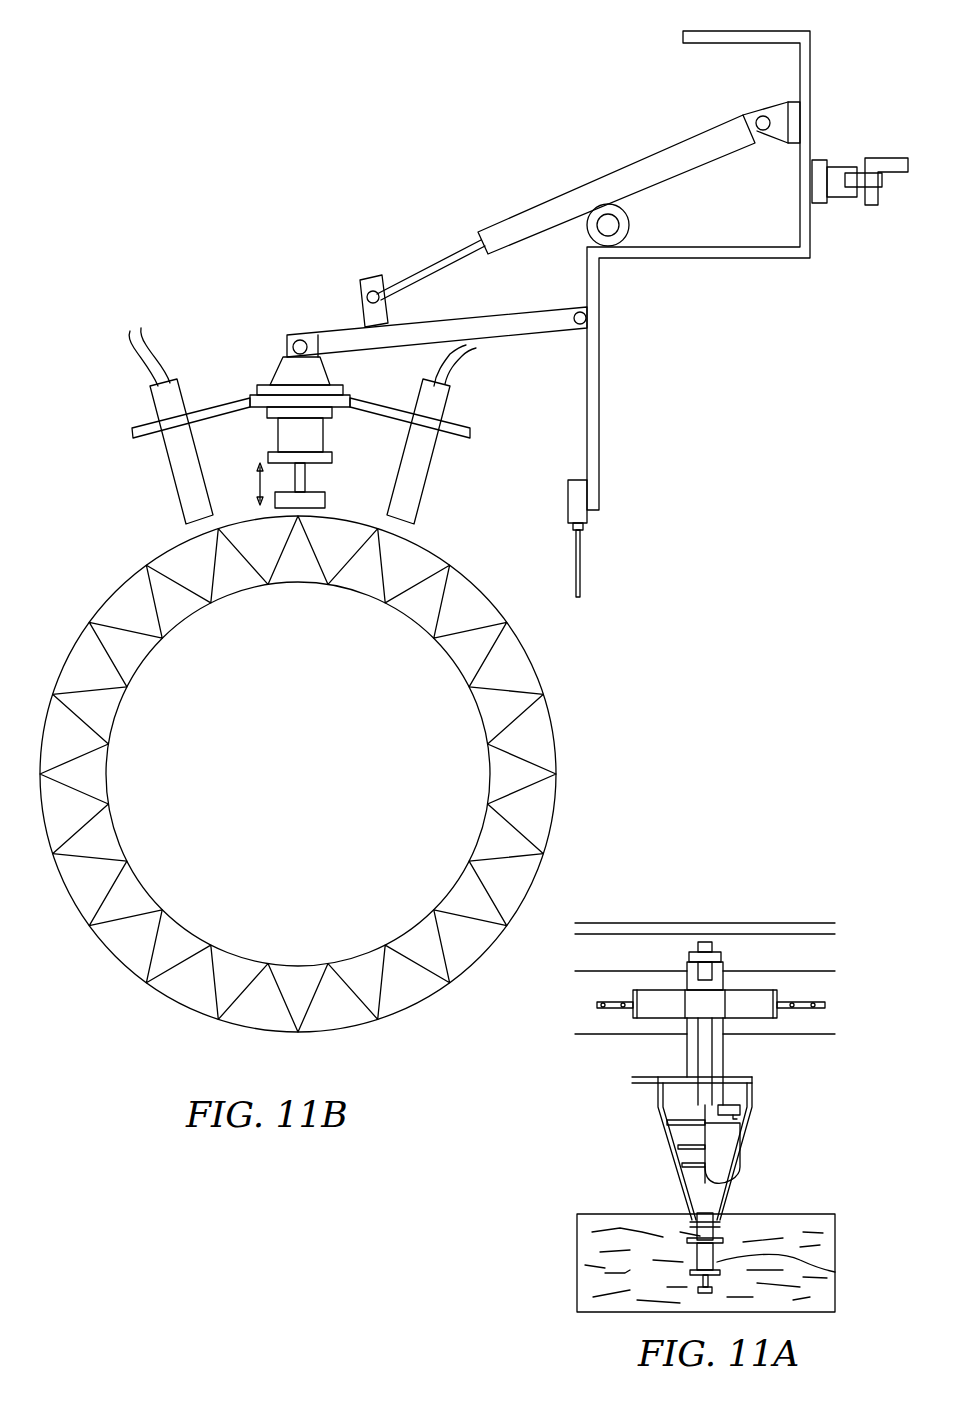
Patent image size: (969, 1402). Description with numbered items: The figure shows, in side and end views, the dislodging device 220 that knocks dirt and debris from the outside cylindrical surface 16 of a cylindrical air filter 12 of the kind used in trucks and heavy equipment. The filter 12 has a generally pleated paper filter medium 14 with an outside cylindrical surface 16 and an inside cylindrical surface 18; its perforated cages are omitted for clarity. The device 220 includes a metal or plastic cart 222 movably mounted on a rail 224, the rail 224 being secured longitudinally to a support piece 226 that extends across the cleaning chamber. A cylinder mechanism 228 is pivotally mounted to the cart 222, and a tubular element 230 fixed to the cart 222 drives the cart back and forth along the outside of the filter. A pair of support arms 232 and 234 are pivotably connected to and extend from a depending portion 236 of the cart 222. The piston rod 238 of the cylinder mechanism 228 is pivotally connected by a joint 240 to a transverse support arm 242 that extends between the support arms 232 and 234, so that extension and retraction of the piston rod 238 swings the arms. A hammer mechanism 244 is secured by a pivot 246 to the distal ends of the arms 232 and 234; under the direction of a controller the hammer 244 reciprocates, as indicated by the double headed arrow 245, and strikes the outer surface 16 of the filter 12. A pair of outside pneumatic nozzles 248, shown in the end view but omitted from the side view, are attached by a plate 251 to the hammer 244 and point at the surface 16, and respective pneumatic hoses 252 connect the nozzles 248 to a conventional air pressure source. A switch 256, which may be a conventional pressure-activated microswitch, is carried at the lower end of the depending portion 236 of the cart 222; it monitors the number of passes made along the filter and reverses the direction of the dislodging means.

In FIG. 11B, the cylindrical air filter 12 is at (558, 790).
In FIG. 11A, the cylindrical air filter 12 is at (576, 1297).
In FIG. 11B, the pleated paper filter medium 14 is at (492, 895).
In FIG. 11B, the outside cylindrical surface 16 is at (440, 540).
In FIG. 11A, the outside cylindrical surface 16 is at (596, 1263).
In FIG. 11B, the inside cylindrical surface 18 is at (488, 762).
In FIG. 11B, the dislodging device 220 is at (708, 463).
In FIG. 11A, the dislodging device 220 is at (743, 920).
In FIG. 11B, the cart 222 is at (818, 205).
In FIG. 11A, the cart 222 is at (666, 991).
In FIG. 11B, the rail 224 is at (855, 165).
In FIG. 11A, the rail 224 is at (612, 1002).
In FIG. 11B, the support piece 226 is at (890, 176).
In FIG. 11A, the support piece 226 is at (783, 970).
In FIG. 11B, the cylinder mechanism 228 is at (580, 190).
In FIG. 11A, the cylinder mechanism 228 is at (710, 1058).
In FIG. 11B, the tubular element 230 is at (628, 217).
In FIG. 11B, the support arm 232 is at (513, 336).
In FIG. 11A, the support arm 232 is at (746, 1137).
In FIG. 11A, the support arm 234 is at (680, 1192).
In FIG. 11B, the depending portion 236 is at (600, 364).
In FIG. 11B, the piston rod 238 is at (430, 262).
In FIG. 11A, the piston rod 238 is at (690, 1148).
In FIG. 11B, the joint 240 is at (358, 290).
In FIG. 11A, the transverse support arm 242 is at (715, 1200).
In FIG. 11B, the hammer mechanism 244 is at (277, 438).
In FIG. 11A, the hammer mechanism 244 is at (805, 1263).
In FIG. 11B, the double headed arrow 245 is at (257, 476).
In FIG. 11B, the pivot 246 is at (286, 346).
In FIG. 11A, the pivot 246 is at (714, 1218).
In FIG. 11B, the outside pneumatic nozzles 248 is at (183, 511).
In FIG. 11B, the plate 251 is at (148, 421).
In FIG. 11B, the pneumatic hoses 252 is at (142, 354).
In FIG. 11B, the switch 256 is at (567, 500).